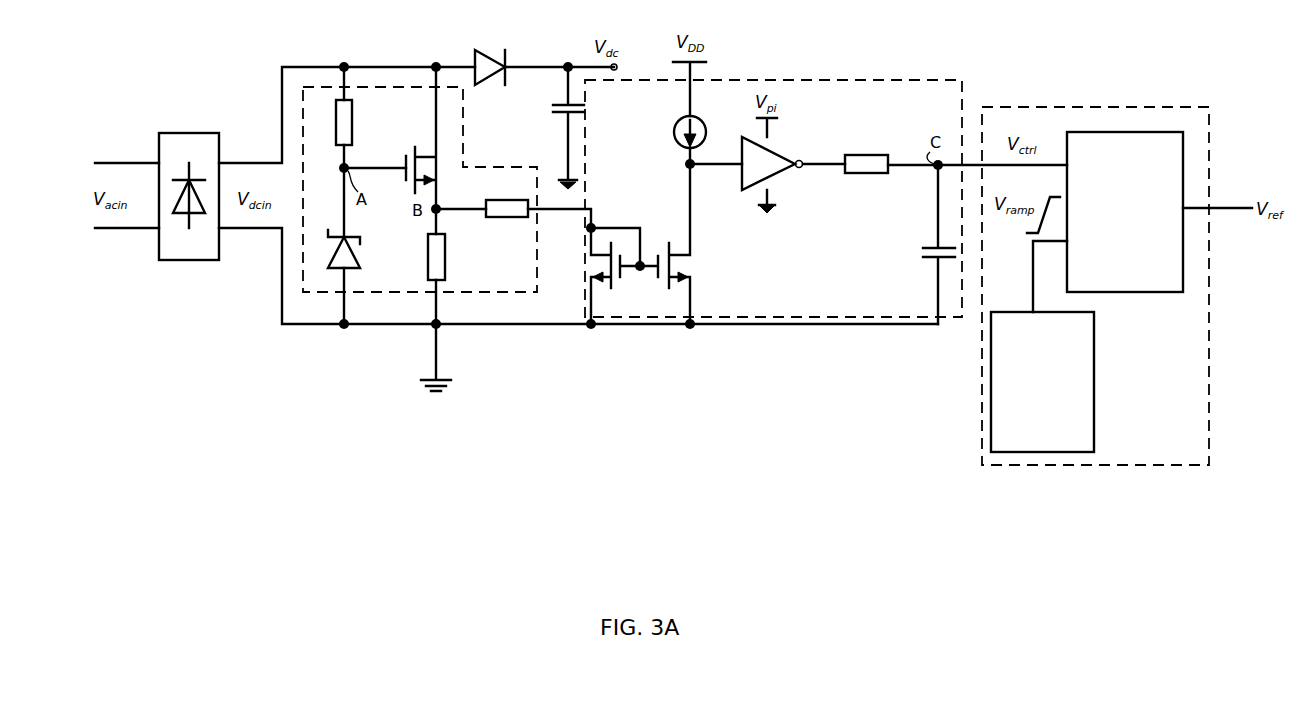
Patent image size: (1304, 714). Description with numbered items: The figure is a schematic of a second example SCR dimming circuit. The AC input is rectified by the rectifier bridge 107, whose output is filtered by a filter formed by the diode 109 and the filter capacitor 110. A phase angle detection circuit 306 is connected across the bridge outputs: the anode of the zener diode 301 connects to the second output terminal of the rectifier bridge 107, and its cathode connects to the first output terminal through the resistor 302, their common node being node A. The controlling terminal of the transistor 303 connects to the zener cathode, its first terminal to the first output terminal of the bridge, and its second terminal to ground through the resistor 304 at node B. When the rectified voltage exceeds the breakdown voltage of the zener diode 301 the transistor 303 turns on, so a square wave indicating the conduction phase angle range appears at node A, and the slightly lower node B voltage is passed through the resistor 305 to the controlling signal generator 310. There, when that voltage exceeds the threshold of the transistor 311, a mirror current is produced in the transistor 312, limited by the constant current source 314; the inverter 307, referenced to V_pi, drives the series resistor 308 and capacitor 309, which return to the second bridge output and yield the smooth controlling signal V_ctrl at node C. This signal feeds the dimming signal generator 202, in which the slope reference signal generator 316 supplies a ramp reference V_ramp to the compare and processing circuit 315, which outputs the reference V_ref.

The rectifier bridge 107 is at (185, 133).
The diode 109 is at (497, 56).
The filter capacitor 110 is at (554, 108).
The zener diode 301 is at (335, 246).
The resistor 302 is at (347, 131).
The transistor 303 is at (430, 139).
The resistor 304 is at (428, 243).
The resistor 305 is at (509, 206).
The phase angle detection circuit 306 is at (420, 189).
The inverter 307 is at (748, 178).
The resistor 308 is at (858, 176).
The capacitor 309 is at (923, 252).
The controlling signal generator 310 is at (773, 198).
The transistor 311 is at (590, 270).
The transistor 312 is at (692, 262).
The constant current source 314 is at (680, 118).
The compare and processing circuit 315 is at (1125, 212).
The slope reference signal generator 316 is at (1042, 382).
The dimming signal generator 202 is at (1095, 286).